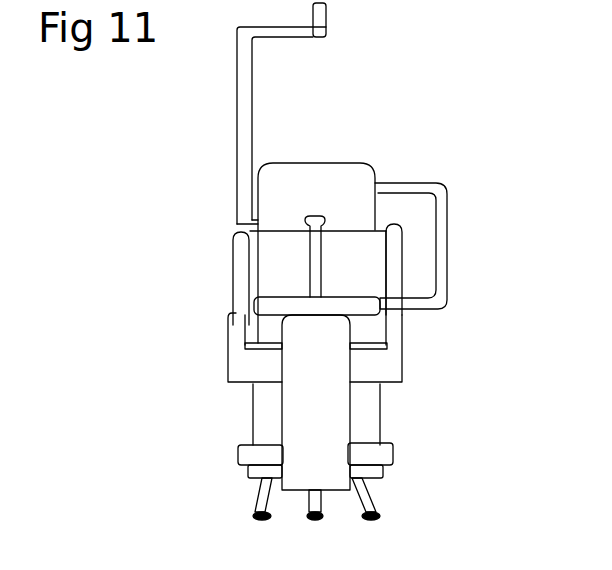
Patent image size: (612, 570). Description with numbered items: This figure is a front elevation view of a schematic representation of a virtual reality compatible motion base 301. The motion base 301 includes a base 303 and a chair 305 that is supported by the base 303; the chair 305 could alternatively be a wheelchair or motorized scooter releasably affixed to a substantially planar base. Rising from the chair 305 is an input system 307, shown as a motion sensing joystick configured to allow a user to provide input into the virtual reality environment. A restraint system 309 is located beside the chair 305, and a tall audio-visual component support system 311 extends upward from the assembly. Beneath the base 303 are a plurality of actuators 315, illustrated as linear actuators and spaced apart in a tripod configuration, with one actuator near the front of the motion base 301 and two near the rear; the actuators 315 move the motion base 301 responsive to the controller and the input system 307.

The motion base 301 is at (410, 116).
The base 303 is at (382, 410).
The chair 305 is at (317, 283).
The input system 307 is at (323, 252).
The restraint system 309 is at (443, 210).
The audio-visual component support system 311 is at (298, 38).
The actuators 315 is at (261, 497).